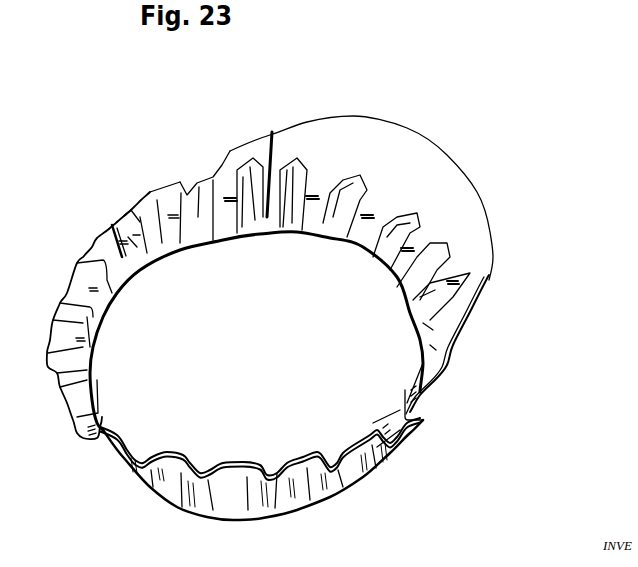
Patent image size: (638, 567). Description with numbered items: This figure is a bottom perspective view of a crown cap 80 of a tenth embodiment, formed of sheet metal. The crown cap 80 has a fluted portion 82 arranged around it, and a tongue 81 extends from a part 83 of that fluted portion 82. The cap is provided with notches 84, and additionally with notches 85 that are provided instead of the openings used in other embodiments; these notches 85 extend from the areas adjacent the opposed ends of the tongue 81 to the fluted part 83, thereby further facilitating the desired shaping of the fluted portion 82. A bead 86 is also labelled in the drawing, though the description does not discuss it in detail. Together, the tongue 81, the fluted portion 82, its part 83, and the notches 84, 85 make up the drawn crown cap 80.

The crown cap 80 is at (70, 259).
The tongue 81 is at (437, 160).
The fluted portion 82 is at (230, 497).
The part of the fluted portion 83 is at (523, 193).
The notches 84 is at (116, 222).
The notches 85 is at (285, 115).
The bead 86 is at (117, 440).